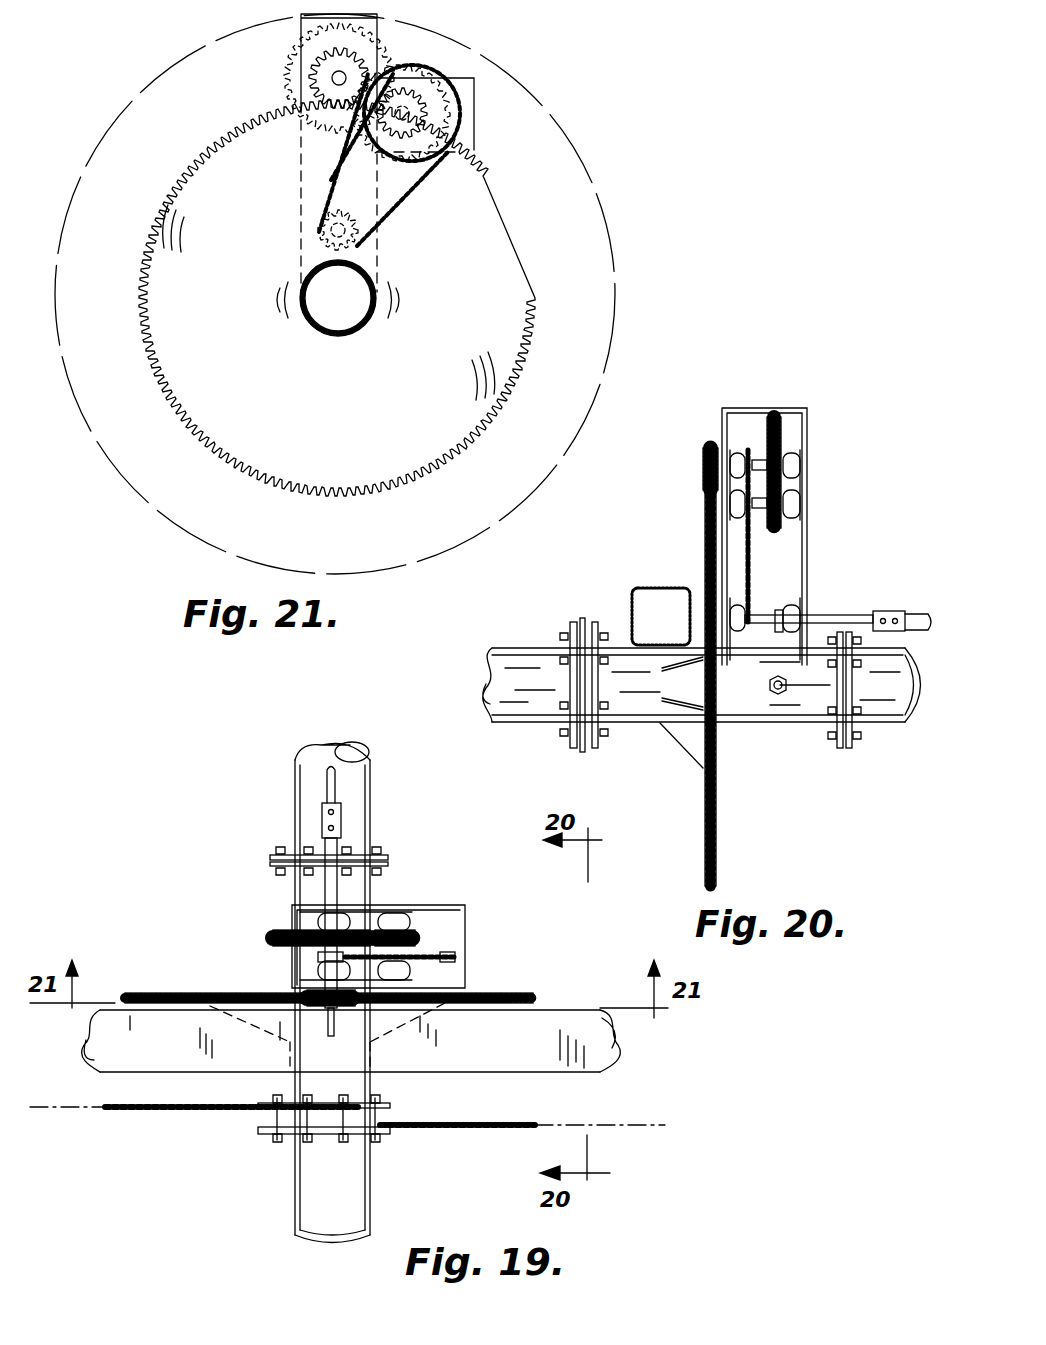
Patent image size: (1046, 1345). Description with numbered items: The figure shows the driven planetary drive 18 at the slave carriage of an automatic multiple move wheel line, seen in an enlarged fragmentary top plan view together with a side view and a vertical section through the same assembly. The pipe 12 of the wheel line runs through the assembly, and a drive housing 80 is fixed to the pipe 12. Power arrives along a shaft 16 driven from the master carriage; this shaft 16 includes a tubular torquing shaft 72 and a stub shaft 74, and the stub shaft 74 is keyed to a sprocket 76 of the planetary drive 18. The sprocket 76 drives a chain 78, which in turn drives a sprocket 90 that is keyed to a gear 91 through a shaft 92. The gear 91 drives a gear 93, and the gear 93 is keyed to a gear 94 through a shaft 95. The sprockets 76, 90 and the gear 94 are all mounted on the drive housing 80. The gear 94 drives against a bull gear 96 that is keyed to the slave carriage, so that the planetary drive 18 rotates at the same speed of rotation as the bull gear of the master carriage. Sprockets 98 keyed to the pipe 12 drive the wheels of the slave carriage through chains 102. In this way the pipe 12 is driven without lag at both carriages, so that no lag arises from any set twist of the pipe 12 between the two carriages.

In FIG. 21, the pipe 12 is at (302, 308).
In FIG. 20, the pipe 12 is at (532, 722).
In FIG. 19, the pipe 12 is at (372, 808).
In FIG. 20, the shaft 16 is at (912, 614).
In FIG. 19, the shaft 16 is at (328, 772).
In FIG. 20, the driven planetary drive 18 is at (771, 393).
In FIG. 19, the driven planetary drive 18 is at (258, 945).
In FIG. 20, the tubular torquing shaft 72 is at (930, 660).
In FIG. 19, the tubular torquing shaft 72 is at (324, 802).
In FIG. 20, the stub shaft 74 is at (866, 612).
In FIG. 19, the stub shaft 74 is at (326, 852).
In FIG. 21, the sprocket 76 is at (362, 242).
In FIG. 20, the sprocket 76 is at (674, 590).
In FIG. 21, the chain 78 is at (386, 104).
In FIG. 20, the chain 78 is at (748, 578).
In FIG. 19, the chain 78 is at (456, 960).
In FIG. 21, the drive housing 80 is at (387, 153).
In FIG. 20, the drive housing 80 is at (808, 450).
In FIG. 19, the drive housing 80 is at (378, 946).
In FIG. 21, the sprocket 90 is at (405, 66).
In FIG. 21, the gear 91 is at (402, 113).
In FIG. 20, the gear 91 is at (786, 518).
In FIG. 19, the gear 91 is at (414, 924).
In FIG. 21, the shaft 92 is at (402, 113).
In FIG. 20, the shaft 92 is at (770, 548).
In FIG. 19, the shaft 92 is at (466, 946).
In FIG. 21, the gear 93 is at (339, 78).
In FIG. 20, the gear 93 is at (782, 430).
In FIG. 19, the gear 93 is at (290, 935).
In FIG. 21, the gear 94 is at (339, 78).
In FIG. 20, the gear 94 is at (706, 458).
In FIG. 19, the gear 94 is at (353, 1006).
In FIG. 20, the shaft 95 is at (760, 465).
In FIG. 19, the shaft 95 is at (320, 957).
In FIG. 21, the bull gear 96 is at (540, 300).
In FIG. 20, the bull gear 96 is at (717, 780).
In FIG. 19, the bull gear 96 is at (534, 998).
In FIG. 20, the sprockets 98 is at (586, 672).
In FIG. 19, the sprockets 98 is at (332, 1122).
In FIG. 19, the chains 102 is at (170, 1110).